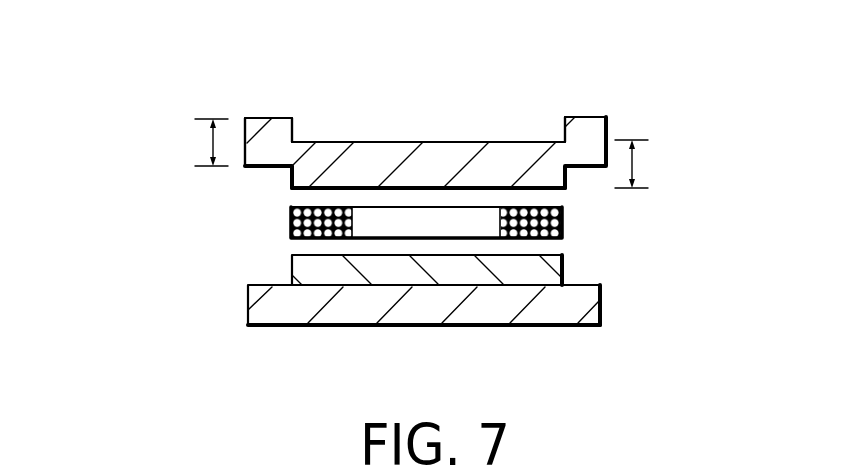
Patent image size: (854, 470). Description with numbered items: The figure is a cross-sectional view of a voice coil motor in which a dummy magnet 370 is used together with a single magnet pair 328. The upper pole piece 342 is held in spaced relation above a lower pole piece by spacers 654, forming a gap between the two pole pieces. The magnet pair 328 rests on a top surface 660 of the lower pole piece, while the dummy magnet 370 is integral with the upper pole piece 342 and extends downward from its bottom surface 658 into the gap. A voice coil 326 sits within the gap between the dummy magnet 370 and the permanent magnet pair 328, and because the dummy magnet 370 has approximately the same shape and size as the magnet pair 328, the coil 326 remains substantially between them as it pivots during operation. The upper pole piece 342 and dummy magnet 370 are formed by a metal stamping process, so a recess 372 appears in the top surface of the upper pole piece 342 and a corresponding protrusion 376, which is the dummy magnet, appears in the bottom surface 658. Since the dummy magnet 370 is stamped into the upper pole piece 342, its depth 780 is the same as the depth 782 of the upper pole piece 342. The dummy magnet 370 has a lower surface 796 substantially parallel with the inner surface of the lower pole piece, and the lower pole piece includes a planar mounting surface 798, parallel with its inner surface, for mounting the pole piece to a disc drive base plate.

The voice coil 326 is at (291, 222).
The magnet pair 328 is at (563, 268).
The upper pole piece 342 is at (290, 129).
The dummy magnet 370 is at (443, 152).
The recess 372 is at (531, 118).
The protrusion 376 is at (562, 190).
The spacers 654 is at (251, 214).
The bottom surface 658 is at (267, 166).
The top surface 660 is at (260, 285).
The depth 780 is at (636, 165).
The depth 782 is at (207, 146).
The lower surface 796 is at (343, 192).
The planar mounting surface 798 is at (483, 327).